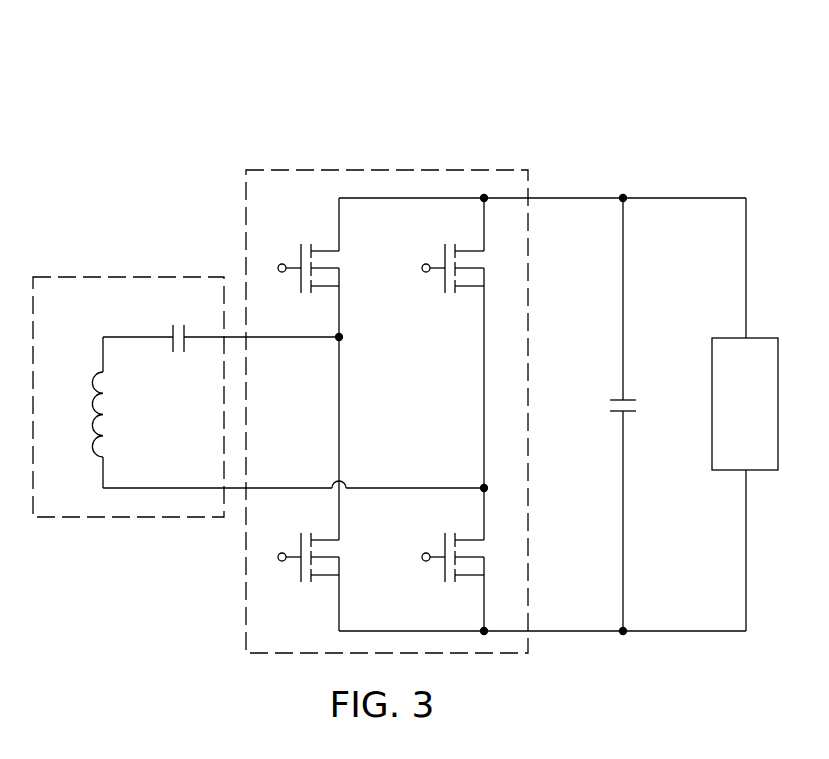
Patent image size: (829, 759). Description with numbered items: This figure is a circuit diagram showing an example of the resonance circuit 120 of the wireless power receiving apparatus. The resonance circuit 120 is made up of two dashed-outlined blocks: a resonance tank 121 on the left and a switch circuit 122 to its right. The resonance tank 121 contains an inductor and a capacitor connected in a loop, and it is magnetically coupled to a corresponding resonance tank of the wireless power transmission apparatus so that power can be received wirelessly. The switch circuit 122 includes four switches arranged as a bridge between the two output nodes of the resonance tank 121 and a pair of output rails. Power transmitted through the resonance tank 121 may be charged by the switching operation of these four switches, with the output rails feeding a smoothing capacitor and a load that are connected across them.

The resonance circuit 120 is at (382, 48).
The resonance tank 121 is at (128, 277).
The switch circuit 122 is at (407, 170).